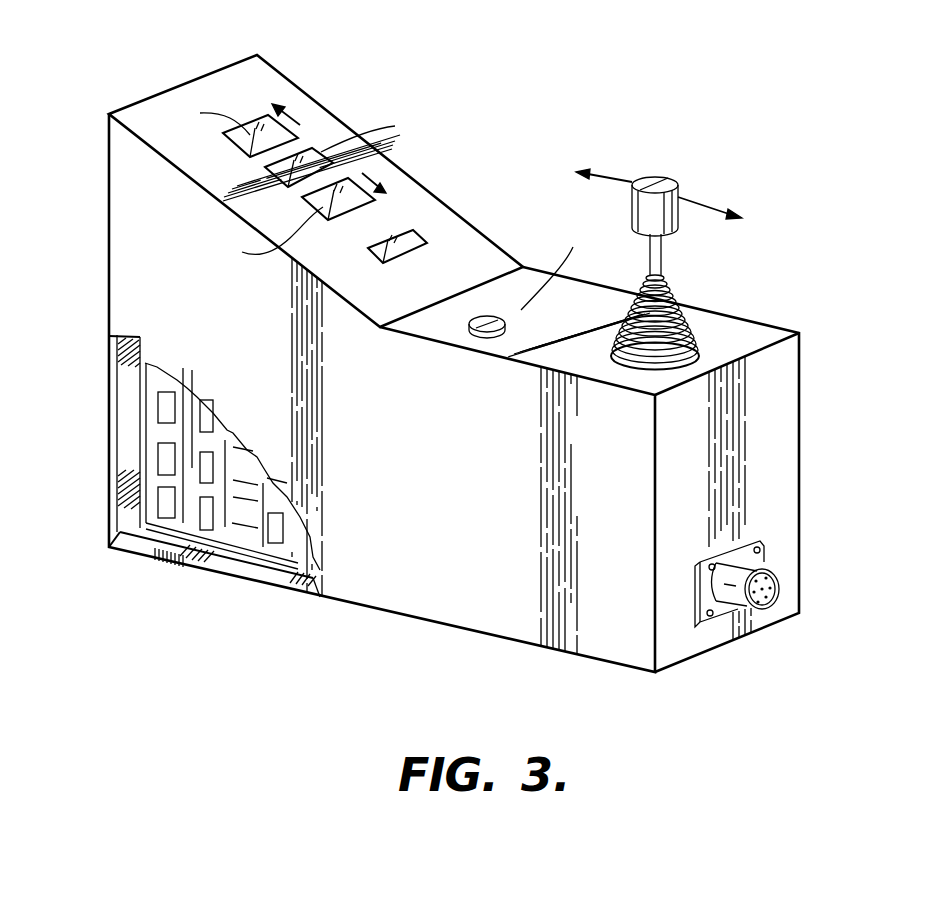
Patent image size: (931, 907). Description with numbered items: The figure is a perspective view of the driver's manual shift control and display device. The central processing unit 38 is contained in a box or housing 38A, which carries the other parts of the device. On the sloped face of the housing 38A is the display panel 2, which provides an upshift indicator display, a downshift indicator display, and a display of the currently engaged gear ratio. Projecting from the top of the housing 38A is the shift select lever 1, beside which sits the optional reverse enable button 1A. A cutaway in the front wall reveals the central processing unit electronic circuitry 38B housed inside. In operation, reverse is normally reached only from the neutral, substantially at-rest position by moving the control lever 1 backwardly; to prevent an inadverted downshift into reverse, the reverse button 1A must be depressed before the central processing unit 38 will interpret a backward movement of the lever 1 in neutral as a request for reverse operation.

The shift select lever 1 is at (672, 178).
The reverse enable button 1A is at (487, 332).
The display panel 2 is at (256, 74).
The central processing unit 38 is at (120, 395).
The housing 38A is at (470, 612).
The central processing unit electronic circuitry 38B is at (165, 460).